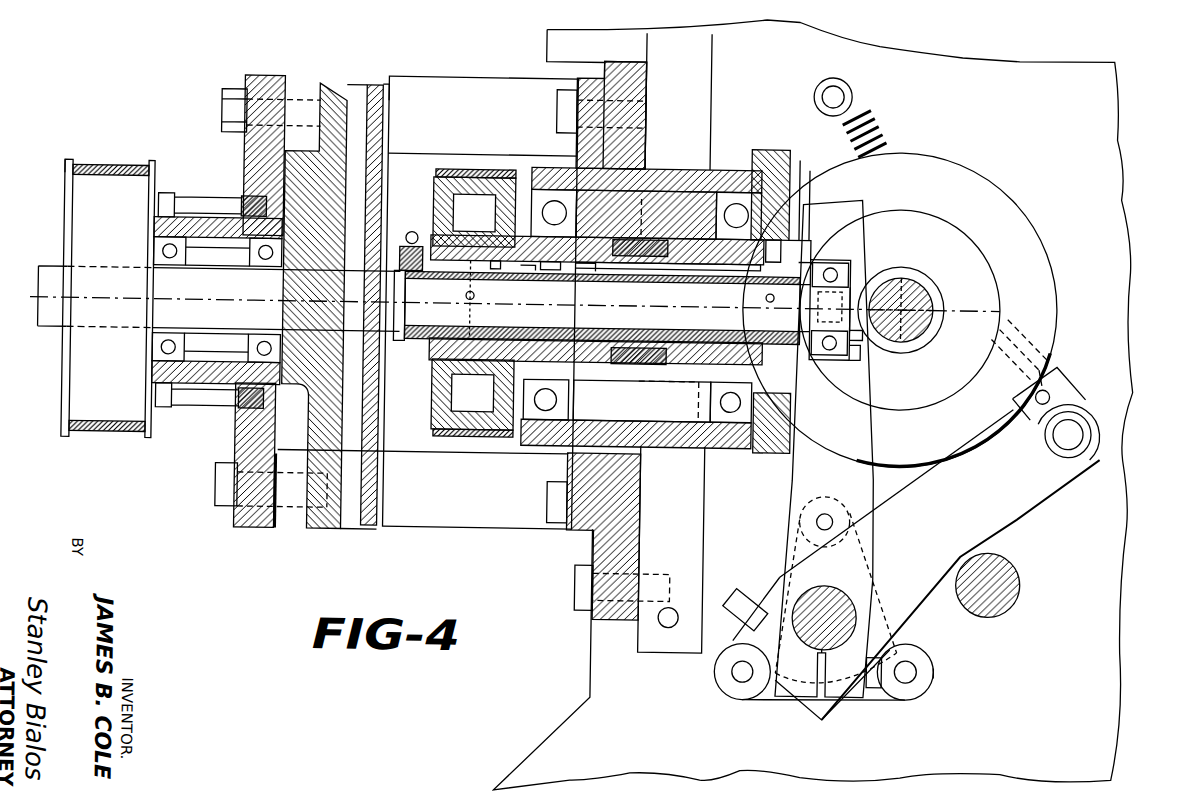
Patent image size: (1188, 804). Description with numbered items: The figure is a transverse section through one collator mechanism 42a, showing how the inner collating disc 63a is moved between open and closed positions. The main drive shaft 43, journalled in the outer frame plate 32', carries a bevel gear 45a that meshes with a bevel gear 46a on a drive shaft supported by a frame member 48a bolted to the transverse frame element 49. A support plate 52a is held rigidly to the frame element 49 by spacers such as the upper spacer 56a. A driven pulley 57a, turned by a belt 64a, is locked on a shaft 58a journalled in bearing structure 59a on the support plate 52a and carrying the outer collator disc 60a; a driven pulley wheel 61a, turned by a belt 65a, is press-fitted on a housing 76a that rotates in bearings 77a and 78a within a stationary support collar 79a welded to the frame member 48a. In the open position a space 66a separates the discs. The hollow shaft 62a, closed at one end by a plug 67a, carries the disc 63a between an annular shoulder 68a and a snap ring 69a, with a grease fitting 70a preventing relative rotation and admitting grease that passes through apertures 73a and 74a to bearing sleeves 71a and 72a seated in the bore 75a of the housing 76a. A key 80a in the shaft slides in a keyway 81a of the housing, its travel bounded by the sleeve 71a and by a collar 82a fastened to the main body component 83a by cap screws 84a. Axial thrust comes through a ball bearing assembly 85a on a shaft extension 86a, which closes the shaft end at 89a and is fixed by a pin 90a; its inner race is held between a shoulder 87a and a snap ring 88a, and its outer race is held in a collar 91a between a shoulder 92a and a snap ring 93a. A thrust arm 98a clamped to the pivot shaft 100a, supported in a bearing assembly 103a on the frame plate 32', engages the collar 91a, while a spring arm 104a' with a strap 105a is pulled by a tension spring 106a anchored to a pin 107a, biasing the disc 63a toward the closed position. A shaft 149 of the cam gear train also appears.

The frame plate 32' is at (832, 408).
The collator mechanism 42a is at (84, 442).
The main drive shaft 43 is at (908, 314).
The bevel gear 45a is at (963, 167).
The bevel gear 46a is at (756, 169).
The frame member 48a is at (576, 80).
The frame element 49 is at (628, 60).
The support plate 52a is at (266, 76).
The upper spacer 56a is at (494, 72).
The driven pulley 57a is at (65, 170).
The shaft 58a is at (52, 259).
The bearing structure 59a is at (163, 250).
The collator disc 60a is at (332, 86).
The driven pulley wheel 61a is at (437, 165).
The shaft 62a is at (618, 262).
The collating disc 63a is at (381, 80).
The belt 64a is at (118, 166).
The belt 65a is at (477, 165).
The space 66a is at (380, 190).
The plug 67a is at (379, 356).
The annular shoulder 68a is at (430, 322).
The snap ring 69a is at (384, 249).
The grease fitting 70a is at (424, 246).
The bearing sleeve 71a is at (492, 264).
The bearing sleeve 72a is at (648, 254).
The apertures 73a is at (470, 294).
The apertures 74a is at (762, 290).
The bore 75a is at (545, 264).
The housing 76a is at (587, 224).
The bearing 77a is at (552, 193).
The bearing 78a is at (770, 189).
The support collar 79a is at (718, 168).
The key 80a is at (590, 265).
The keyway 81a is at (530, 268).
The collar 82a is at (788, 231).
The main body component 83a is at (648, 230).
The cap screws 84a is at (802, 247).
The ball bearing assembly 85a is at (836, 350).
The shaft extension 86a is at (858, 290).
The shoulder 87a is at (770, 292).
The snap ring 88a is at (872, 260).
The closed inner end portion 89a is at (792, 414).
The pin 90a is at (802, 335).
The collar 91a is at (836, 338).
The shoulder 92a is at (814, 312).
The snap ring 93a is at (850, 323).
The thrust arm 98a is at (798, 489).
The pivot shaft 100a is at (830, 585).
The bearing assembly 103a is at (939, 656).
The spring arm 104a' is at (950, 565).
The strap 105a is at (1063, 377).
The tension spring 106a is at (886, 120).
The pin 107a is at (837, 78).
The shaft 149 is at (1006, 553).